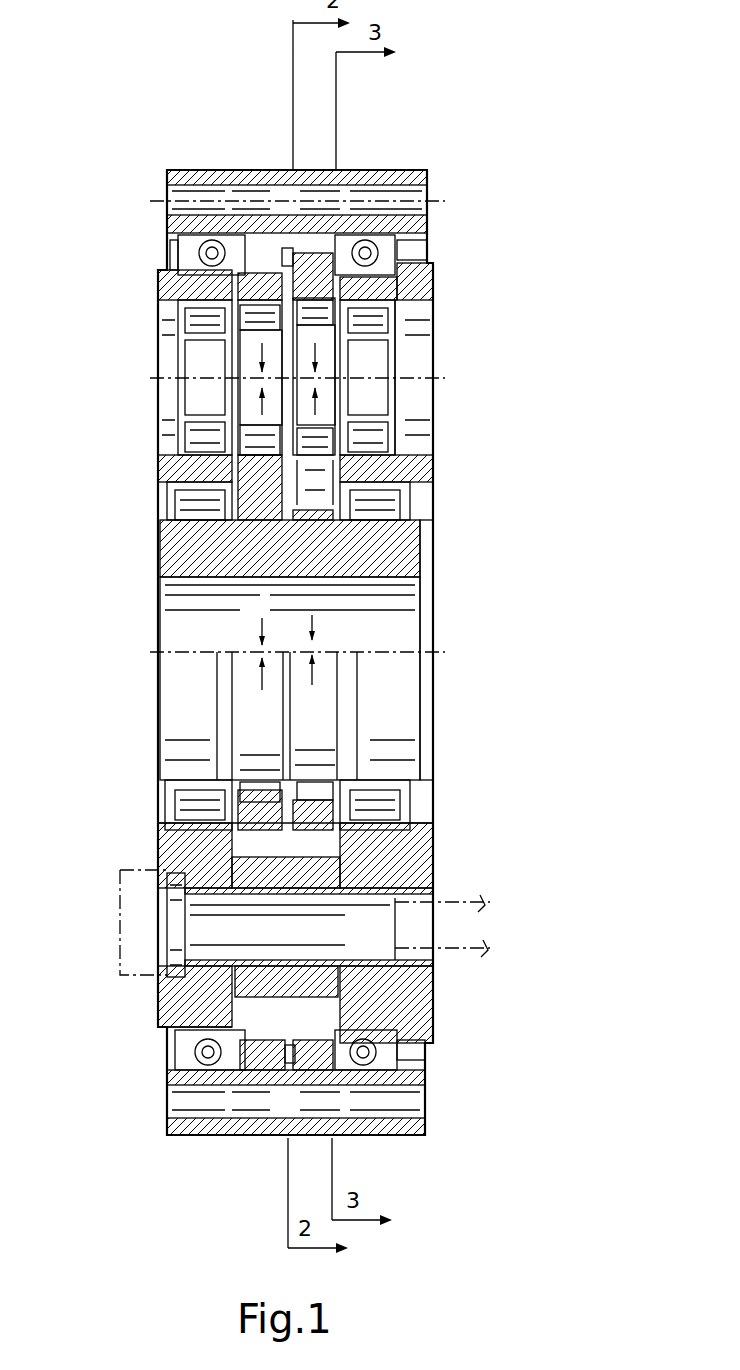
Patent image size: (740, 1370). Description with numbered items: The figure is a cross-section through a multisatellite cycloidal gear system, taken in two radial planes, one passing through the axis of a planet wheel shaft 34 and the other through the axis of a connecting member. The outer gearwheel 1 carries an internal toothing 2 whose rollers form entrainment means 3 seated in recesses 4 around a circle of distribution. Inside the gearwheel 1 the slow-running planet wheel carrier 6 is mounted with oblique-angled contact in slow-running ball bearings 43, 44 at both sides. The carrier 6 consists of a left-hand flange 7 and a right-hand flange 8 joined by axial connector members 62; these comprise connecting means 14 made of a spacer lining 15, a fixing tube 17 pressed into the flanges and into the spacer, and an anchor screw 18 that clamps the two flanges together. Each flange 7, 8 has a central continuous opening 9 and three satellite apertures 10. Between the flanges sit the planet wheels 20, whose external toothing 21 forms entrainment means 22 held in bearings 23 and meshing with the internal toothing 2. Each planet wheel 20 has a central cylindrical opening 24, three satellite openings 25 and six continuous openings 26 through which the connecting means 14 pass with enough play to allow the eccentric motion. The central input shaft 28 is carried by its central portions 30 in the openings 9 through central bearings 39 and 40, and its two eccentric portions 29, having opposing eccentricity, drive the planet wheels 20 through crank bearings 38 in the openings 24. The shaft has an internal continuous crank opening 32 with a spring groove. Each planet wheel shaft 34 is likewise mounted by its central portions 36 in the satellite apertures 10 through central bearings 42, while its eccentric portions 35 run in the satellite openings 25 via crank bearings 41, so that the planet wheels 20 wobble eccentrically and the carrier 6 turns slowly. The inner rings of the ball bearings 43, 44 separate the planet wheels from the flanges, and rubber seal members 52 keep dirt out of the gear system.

The gearwheel 1 is at (177, 165).
The internal toothing 2 is at (290, 250).
The entrainment means 3 is at (290, 1085).
The recesses 4 is at (320, 1112).
The slow-running planet wheel carrier 6 is at (157, 848).
The left-hand flange 7 is at (157, 1012).
The right-hand flange 8 is at (432, 996).
The central continuous opening 9 is at (200, 792).
The continuous central satellite apertures 10 is at (240, 425).
The connecting means 14 is at (292, 929).
The spacer lining 15 is at (245, 1000).
The fixing tube 17 is at (410, 962).
The anchor screw 18 is at (165, 928).
The planet wheel 20 is at (200, 842).
The external toothing 21 is at (258, 265).
The entrainment means 22 is at (322, 260).
The bearings 23 is at (318, 270).
The continuous central cylindrical opening 24 is at (345, 555).
The continuous cylindrical satellite openings 25 is at (160, 307).
The continuous cylindrical openings 26 is at (390, 864).
The central input shaft 28 is at (416, 624).
The eccentric portions 29 is at (240, 710).
The central portions 30 is at (178, 675).
The continuous crank opening 32 is at (180, 597).
The planet wheel shaft 34 is at (160, 352).
The eccentric portions 35 is at (247, 368).
The central portions 36 is at (193, 400).
The crank bearings 38 is at (263, 808).
The central bearing 39 is at (195, 510).
The central bearing 40 is at (370, 505).
The crank bearings 41 is at (220, 408).
The central bearings 42 is at (400, 318).
The slow-running ball bearing 43 is at (205, 242).
The slow-running ball bearing 44 is at (420, 245).
The rubber seal members 52 is at (420, 1065).
The axial connector members 62 is at (352, 897).